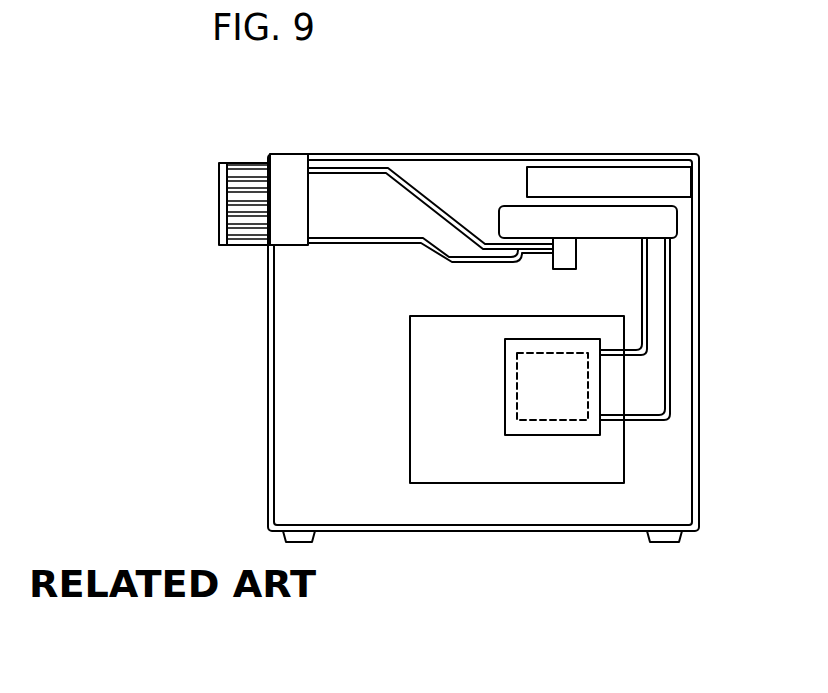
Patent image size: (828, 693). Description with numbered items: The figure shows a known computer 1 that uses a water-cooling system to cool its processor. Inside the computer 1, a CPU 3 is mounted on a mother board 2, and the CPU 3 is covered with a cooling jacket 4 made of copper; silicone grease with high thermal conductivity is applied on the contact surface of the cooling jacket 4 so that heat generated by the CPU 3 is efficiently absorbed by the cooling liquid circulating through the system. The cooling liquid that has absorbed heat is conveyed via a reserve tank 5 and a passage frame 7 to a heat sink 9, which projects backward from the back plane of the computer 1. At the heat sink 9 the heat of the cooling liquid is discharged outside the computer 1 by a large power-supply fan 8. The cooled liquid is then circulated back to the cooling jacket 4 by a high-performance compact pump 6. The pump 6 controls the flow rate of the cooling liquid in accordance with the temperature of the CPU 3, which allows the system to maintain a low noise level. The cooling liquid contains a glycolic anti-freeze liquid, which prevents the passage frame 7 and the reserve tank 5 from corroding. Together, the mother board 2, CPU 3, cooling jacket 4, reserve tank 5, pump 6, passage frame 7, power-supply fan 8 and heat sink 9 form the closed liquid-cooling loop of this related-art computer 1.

The computer 1 is at (525, 61).
The mother board 2 is at (457, 483).
The CPU 3 is at (545, 420).
The cooling jacket 4 is at (588, 432).
The reserve tank 5 is at (670, 225).
The pump 6 is at (548, 255).
The passage frame 7 is at (418, 187).
The power-supply fan 8 is at (288, 177).
The heat sink 9 is at (220, 222).